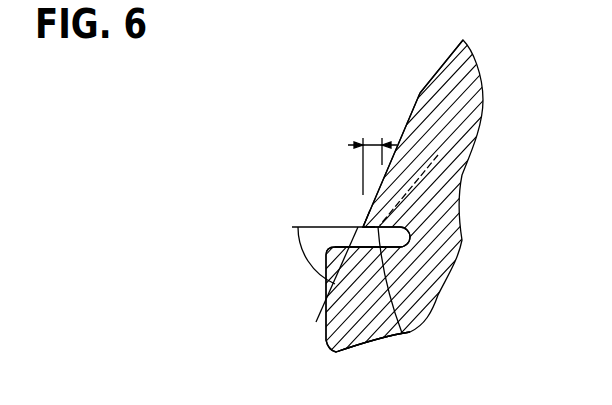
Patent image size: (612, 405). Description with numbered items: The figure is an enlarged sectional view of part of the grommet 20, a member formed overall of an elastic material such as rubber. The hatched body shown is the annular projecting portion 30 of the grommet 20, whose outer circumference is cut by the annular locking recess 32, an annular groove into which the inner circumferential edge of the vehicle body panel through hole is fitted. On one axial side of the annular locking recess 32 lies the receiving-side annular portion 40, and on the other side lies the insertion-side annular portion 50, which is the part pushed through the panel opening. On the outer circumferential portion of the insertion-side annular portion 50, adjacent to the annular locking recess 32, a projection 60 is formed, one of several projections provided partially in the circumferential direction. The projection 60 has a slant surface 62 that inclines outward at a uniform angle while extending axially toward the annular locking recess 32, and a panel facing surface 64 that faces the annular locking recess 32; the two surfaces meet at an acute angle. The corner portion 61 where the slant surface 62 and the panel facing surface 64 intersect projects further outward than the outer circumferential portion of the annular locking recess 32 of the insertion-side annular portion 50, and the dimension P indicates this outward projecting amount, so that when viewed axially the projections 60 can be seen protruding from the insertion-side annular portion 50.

The grommet 20 is at (497, 97).
The annular projecting portion 30 is at (318, 330).
The annular locking recess 32 is at (413, 237).
The receiving-side annular portion 40 is at (355, 322).
The insertion-side annular portion 50 is at (412, 82).
The projection 60 is at (409, 119).
The corner portion 61 is at (363, 223).
The slant surface 62 is at (361, 221).
The panel facing surface 64 is at (401, 333).
The projecting amount P is at (365, 146).